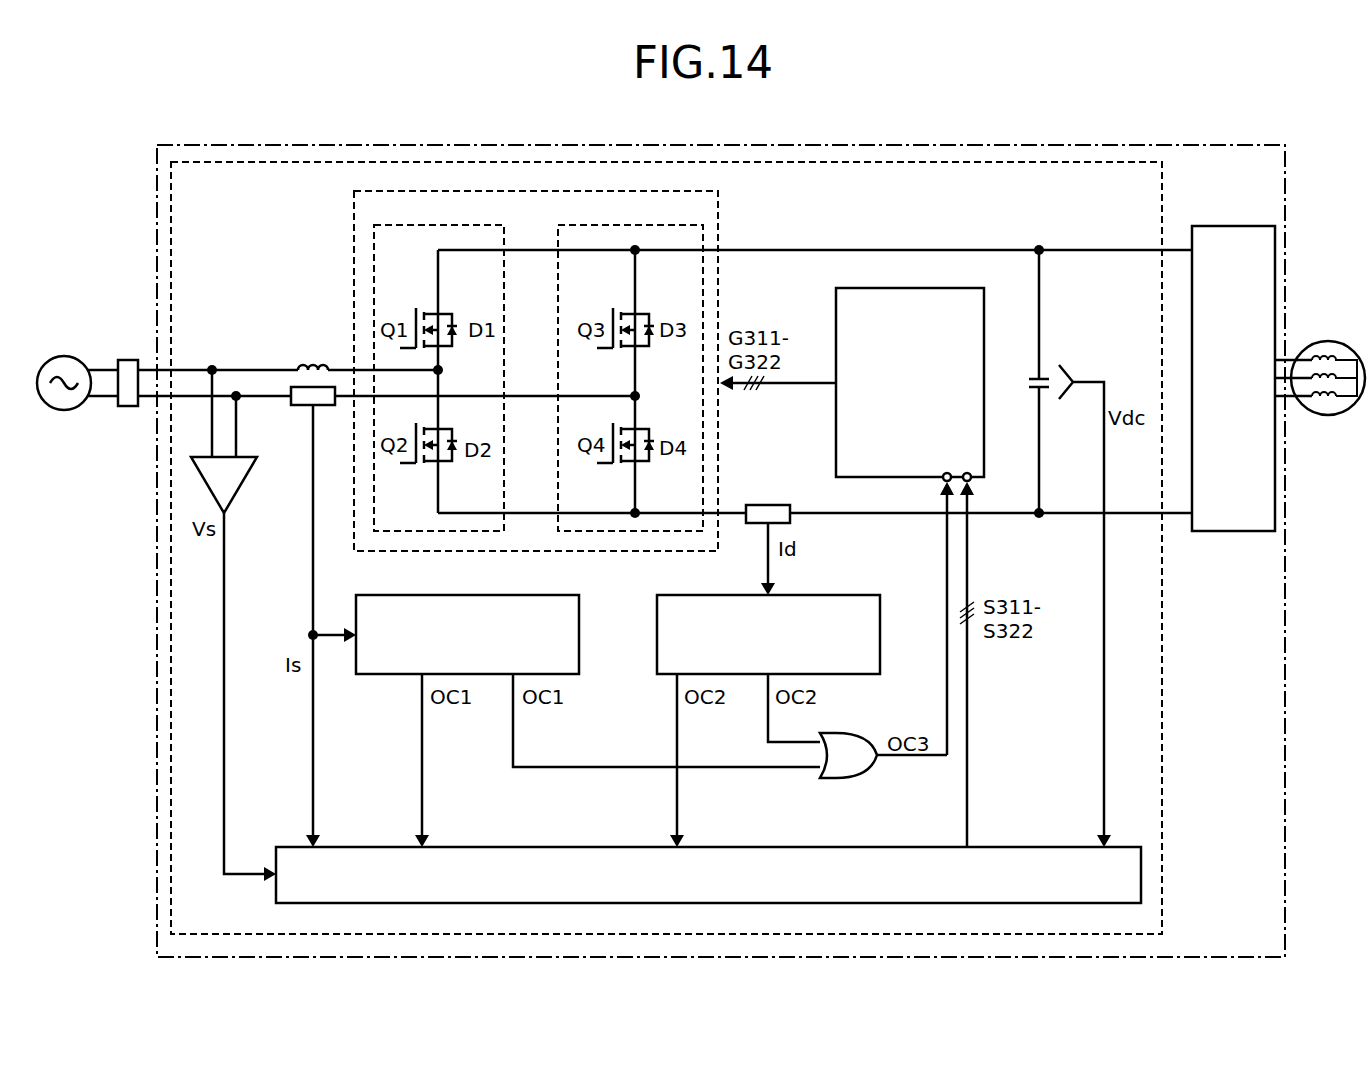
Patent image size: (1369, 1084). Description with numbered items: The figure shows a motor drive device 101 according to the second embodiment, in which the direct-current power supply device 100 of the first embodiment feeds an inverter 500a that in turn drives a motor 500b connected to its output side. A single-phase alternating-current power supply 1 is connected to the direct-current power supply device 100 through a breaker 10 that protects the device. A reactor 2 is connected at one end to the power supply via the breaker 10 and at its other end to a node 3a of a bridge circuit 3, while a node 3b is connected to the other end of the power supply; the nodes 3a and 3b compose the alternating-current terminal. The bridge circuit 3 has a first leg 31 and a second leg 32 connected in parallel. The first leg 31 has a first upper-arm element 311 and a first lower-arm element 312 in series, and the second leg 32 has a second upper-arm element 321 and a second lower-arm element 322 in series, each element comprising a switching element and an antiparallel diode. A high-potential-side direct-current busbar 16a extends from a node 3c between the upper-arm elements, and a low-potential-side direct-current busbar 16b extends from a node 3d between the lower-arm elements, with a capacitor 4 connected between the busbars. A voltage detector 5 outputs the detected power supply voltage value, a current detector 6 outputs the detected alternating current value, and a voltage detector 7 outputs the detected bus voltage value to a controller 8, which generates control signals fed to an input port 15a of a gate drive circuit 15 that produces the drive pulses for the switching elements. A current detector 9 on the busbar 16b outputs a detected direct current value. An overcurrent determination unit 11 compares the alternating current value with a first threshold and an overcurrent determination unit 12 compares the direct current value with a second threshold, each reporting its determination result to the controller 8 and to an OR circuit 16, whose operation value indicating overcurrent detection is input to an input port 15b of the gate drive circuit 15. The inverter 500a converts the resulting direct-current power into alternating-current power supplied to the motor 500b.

The single-phase alternating-current power supply 1 is at (68, 356).
The breaker 10 is at (129, 358).
The reactor 2 is at (314, 362).
The current detector 6 is at (302, 407).
The voltage detector 5 is at (212, 494).
The bridge circuit 3 is at (672, 191).
The first leg 31 is at (452, 225).
The second leg 32 is at (617, 225).
The first upper-arm element 311 is at (441, 309).
The first lower-arm element 312 is at (460, 432).
The second upper-arm element 321 is at (638, 309).
The second lower-arm element 322 is at (627, 472).
The node 3a is at (445, 370).
The node 3b is at (631, 393).
The node 3c is at (637, 248).
The node 3d is at (636, 518).
The direct-current power supply device 100 is at (843, 162).
The motor drive device 101 is at (1103, 145).
The high-potential-side direct-current busbar 16a is at (897, 250).
The low-potential-side direct-current busbar 16b is at (910, 516).
The gate drive circuit 15 is at (928, 289).
The input port 15a is at (970, 471).
The input port 15b is at (948, 472).
The capacitor 4 is at (1033, 378).
The voltage detector 7 is at (1066, 372).
The current detector 9 is at (769, 505).
The overcurrent determination unit 11 is at (535, 596).
The overcurrent determination unit 12 is at (829, 596).
The OR circuit 16 is at (849, 733).
The controller 8 is at (870, 847).
The inverter 500a is at (1236, 226).
The motor 500b is at (1327, 341).